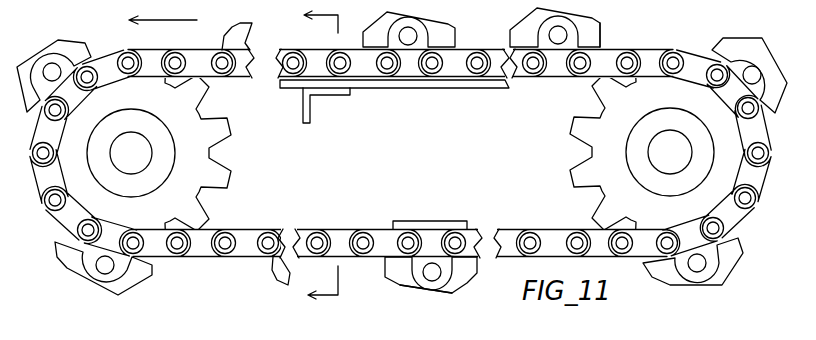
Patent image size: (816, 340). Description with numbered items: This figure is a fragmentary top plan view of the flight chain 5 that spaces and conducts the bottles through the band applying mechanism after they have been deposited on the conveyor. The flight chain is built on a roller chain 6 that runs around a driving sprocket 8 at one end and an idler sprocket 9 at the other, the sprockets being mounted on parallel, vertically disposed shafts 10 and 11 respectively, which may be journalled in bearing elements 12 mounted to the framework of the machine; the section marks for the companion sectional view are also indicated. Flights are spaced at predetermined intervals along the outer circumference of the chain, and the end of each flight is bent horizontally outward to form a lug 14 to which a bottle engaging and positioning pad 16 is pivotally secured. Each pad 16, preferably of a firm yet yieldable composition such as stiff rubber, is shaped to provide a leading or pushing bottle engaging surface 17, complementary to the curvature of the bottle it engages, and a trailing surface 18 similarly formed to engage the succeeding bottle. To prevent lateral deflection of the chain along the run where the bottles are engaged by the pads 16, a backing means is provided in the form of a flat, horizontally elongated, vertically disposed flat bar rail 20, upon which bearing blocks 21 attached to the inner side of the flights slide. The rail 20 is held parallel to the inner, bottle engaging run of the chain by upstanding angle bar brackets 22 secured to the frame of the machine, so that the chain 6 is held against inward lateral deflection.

The flight chain 5 is at (672, 40).
The roller chain 6 is at (343, 235).
The driving sprocket 8 is at (226, 186).
The idler sprocket 9 is at (581, 160).
The shaft 10 is at (135, 145).
The shaft 11 is at (672, 145).
The bearing element 12 is at (315, 169).
The lug 14 is at (411, 26).
The bottle engaging and positioning pad 16 is at (452, 25).
The leading bottle engaging surface 17 is at (534, 24).
The trailing surface 18 is at (598, 23).
The flat bar rail 20 is at (437, 82).
The bearing block 21 is at (437, 223).
The angle bar bracket 22 is at (343, 90).